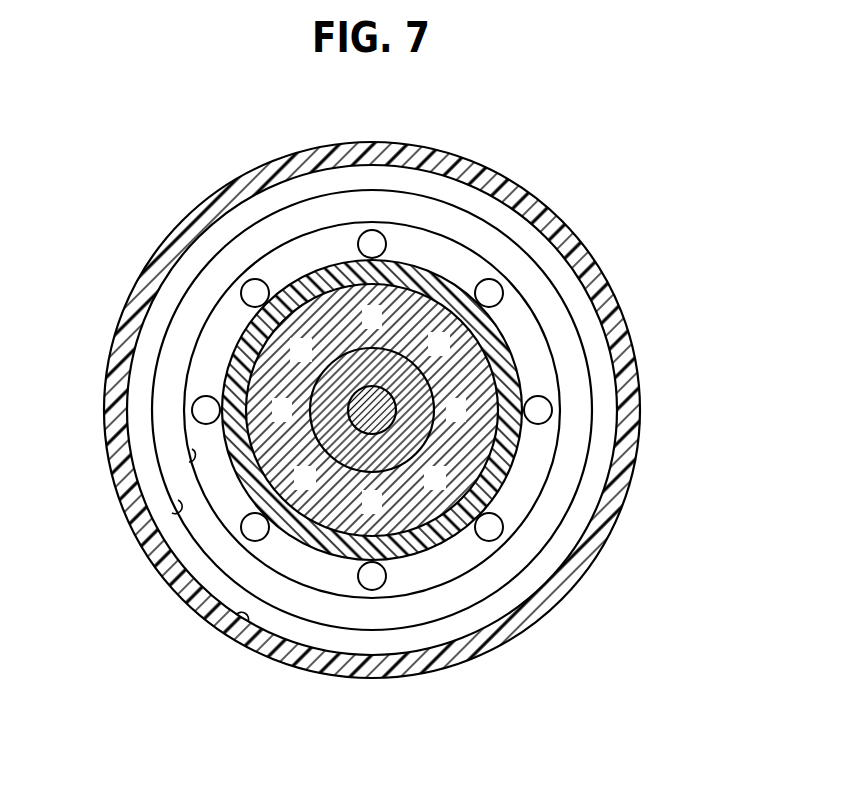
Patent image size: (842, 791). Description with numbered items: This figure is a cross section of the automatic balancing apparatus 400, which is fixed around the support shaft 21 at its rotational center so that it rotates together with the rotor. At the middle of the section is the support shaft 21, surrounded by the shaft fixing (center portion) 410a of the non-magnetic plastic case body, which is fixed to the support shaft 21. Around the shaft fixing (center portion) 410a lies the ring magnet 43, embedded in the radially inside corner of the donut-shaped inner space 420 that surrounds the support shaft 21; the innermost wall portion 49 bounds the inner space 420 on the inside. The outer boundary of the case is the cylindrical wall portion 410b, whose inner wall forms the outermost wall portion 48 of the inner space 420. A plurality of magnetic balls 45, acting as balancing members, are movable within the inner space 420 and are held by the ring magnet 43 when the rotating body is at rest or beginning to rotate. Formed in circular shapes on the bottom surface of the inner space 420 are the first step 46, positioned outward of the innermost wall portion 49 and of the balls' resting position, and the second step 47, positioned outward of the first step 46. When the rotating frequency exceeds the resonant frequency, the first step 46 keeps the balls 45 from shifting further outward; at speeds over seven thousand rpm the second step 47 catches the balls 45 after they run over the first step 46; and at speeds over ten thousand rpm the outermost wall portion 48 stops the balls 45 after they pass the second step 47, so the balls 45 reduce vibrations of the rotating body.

The automatic balancing apparatus 400 is at (533, 142).
The wall portion 410b is at (218, 195).
The shaft fixing (center portion) 410a is at (513, 460).
The inner space 420 is at (166, 290).
The ring magnet 43 is at (487, 348).
The magnetic balls 45 is at (372, 230).
The first step 46 is at (189, 465).
The second step 47 is at (178, 523).
The outermost wall portion 48 is at (247, 625).
The innermost wall portion 49 is at (330, 573).
The support shaft 21 is at (377, 433).